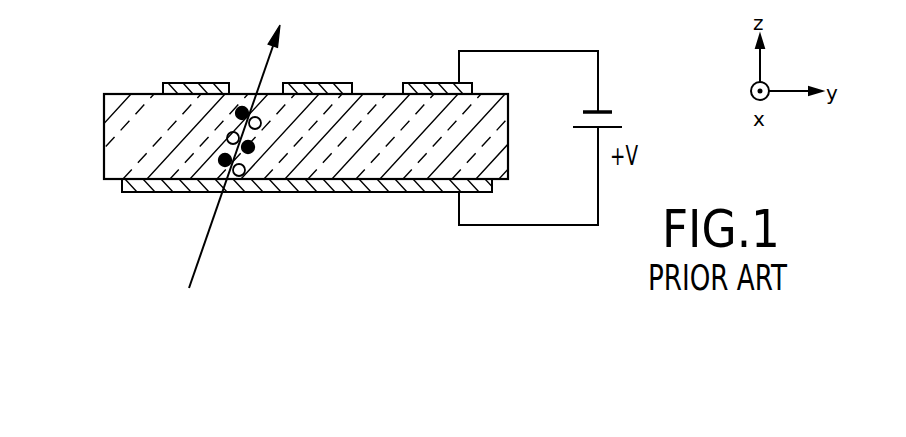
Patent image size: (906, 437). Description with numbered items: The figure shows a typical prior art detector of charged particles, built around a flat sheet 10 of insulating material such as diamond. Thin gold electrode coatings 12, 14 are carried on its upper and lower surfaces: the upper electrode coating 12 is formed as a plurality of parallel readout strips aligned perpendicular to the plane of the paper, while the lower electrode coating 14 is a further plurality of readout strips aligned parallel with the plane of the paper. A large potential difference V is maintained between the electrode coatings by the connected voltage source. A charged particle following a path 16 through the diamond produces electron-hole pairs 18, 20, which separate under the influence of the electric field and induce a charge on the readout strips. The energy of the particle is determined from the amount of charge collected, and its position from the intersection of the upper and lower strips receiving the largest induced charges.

The ferroelectric substrate 10 is at (104, 147).
The upper electrode coating 12 is at (182, 86).
The lower electrode coating 14 is at (312, 186).
The path 16 is at (205, 246).
The electron-hole pairs 18 is at (243, 104).
The electron-hole pairs 20 is at (260, 117).